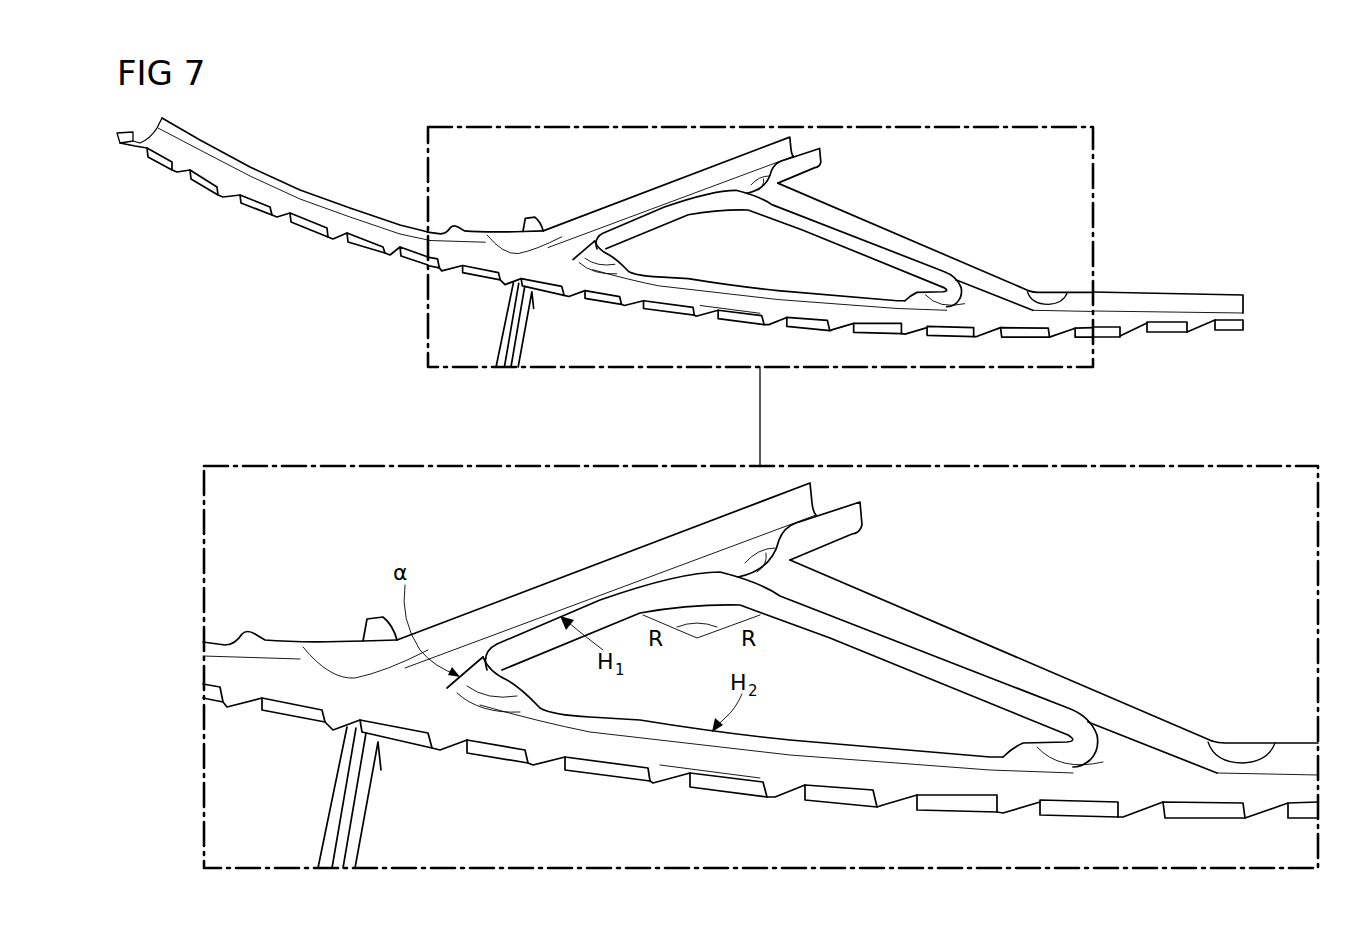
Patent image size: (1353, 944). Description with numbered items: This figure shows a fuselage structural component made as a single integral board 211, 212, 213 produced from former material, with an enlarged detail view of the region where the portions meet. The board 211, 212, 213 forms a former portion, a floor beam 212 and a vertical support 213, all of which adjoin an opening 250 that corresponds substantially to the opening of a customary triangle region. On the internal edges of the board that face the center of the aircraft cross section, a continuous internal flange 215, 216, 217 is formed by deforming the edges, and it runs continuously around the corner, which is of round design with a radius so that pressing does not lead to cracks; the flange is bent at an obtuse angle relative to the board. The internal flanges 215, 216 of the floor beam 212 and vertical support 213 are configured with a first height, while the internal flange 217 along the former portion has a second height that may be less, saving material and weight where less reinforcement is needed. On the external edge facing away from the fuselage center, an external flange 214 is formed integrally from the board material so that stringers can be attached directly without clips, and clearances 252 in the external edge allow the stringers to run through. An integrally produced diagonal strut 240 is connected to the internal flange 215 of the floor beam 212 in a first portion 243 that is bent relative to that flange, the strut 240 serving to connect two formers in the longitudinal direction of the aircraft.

The board 211 is at (410, 704).
The floor beam 212 is at (467, 675).
The vertical support 213 is at (1155, 768).
The external flange 214 is at (253, 207).
The internal flange 215 is at (600, 210).
The internal flange 216 is at (930, 253).
The internal flange 217 is at (300, 193).
The diagonal strut 240 is at (482, 335).
The first portion 243 is at (368, 617).
The opening 250 is at (837, 718).
The clearances 252 is at (562, 760).